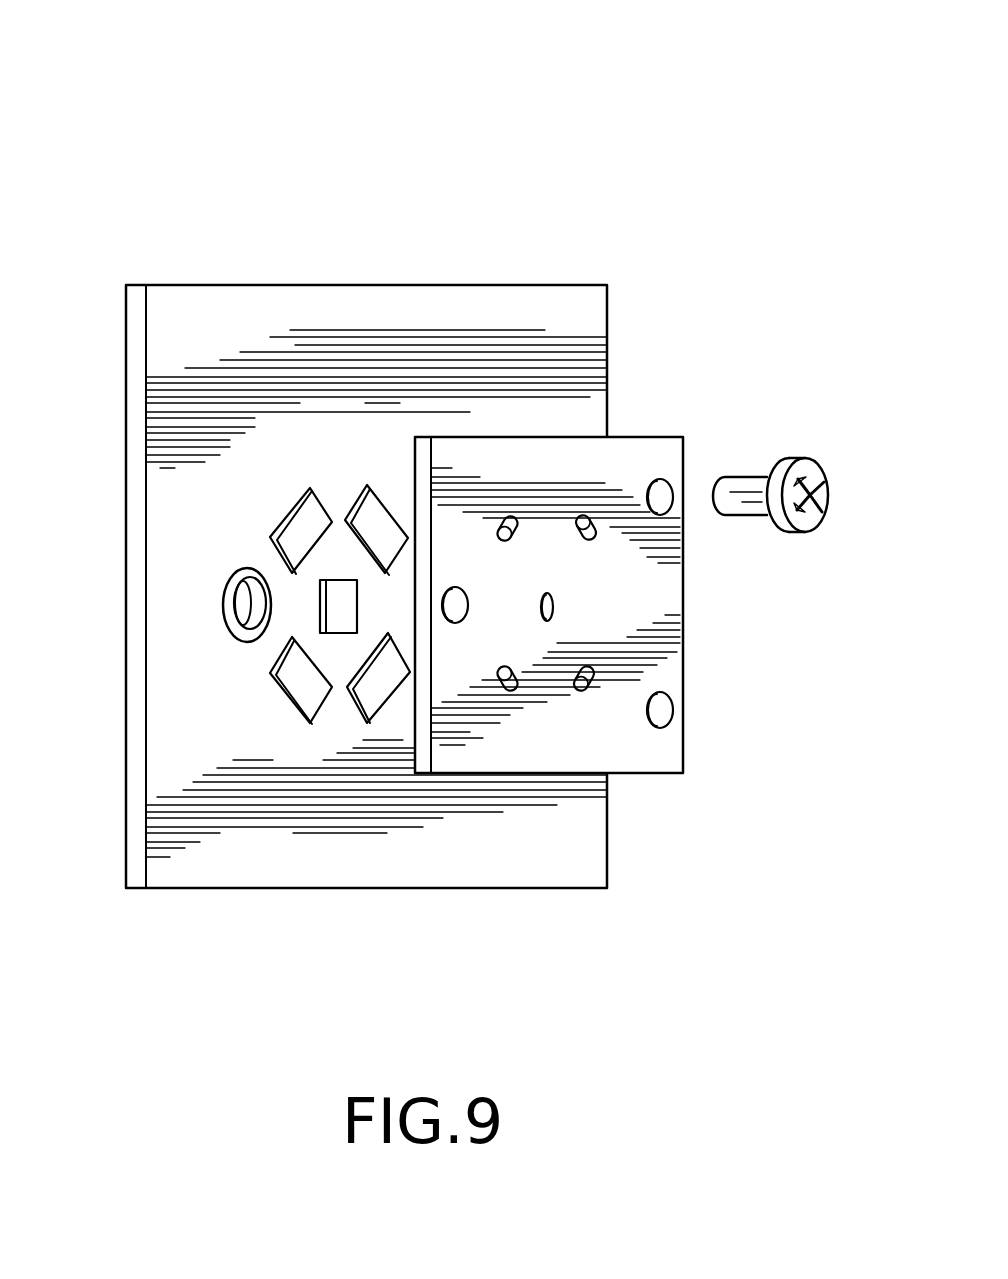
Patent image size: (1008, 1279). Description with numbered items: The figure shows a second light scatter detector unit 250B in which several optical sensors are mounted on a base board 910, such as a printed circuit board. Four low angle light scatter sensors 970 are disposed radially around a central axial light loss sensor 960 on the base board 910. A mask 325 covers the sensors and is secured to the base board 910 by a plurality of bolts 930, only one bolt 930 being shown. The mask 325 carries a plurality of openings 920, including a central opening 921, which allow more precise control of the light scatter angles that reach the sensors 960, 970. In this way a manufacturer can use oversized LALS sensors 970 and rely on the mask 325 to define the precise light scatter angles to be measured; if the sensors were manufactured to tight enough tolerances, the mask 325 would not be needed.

The second light scatter detector unit 250B is at (270, 158).
The base board 910 is at (438, 305).
The LALS sensors 970 is at (375, 518).
The ALL sensor 960 is at (340, 612).
The mask 325 is at (653, 450).
The openings 920 is at (510, 523).
The central opening 921 is at (553, 606).
The bolts 930 is at (807, 473).